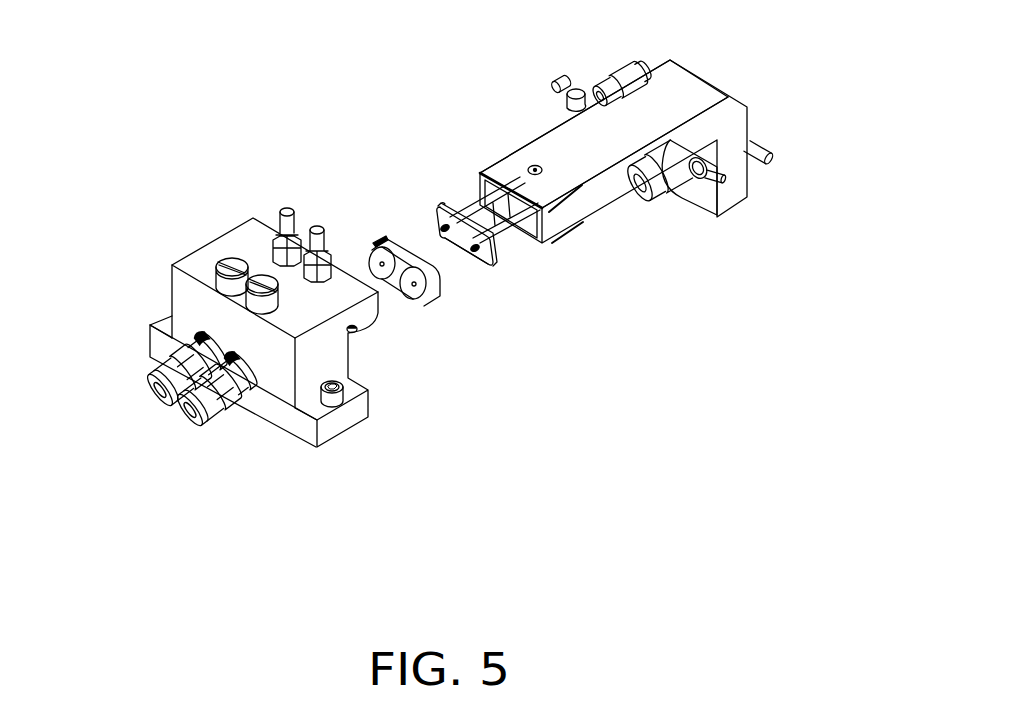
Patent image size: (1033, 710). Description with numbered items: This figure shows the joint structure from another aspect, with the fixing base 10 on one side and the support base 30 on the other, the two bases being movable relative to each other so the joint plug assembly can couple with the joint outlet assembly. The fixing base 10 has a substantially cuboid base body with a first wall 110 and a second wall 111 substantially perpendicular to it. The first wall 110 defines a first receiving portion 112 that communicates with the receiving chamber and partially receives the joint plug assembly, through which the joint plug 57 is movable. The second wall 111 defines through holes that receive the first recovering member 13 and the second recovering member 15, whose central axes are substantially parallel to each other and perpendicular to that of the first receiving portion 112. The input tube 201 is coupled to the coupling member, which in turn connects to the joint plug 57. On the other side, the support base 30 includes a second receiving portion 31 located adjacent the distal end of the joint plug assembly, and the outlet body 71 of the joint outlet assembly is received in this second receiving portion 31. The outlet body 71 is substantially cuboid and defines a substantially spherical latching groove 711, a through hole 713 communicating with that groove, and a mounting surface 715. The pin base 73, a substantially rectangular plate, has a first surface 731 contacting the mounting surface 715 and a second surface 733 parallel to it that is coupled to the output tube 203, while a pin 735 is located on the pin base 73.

The fixing base 10 is at (250, 309).
The second wall 111 is at (193, 265).
The first receiving portion 112 is at (170, 315).
The first wall 110 is at (178, 343).
The input tube 201 is at (147, 367).
The joint plug 57 is at (353, 334).
The second recovering member 15 is at (240, 267).
The first recovering member 13 is at (287, 222).
The outlet body 71 is at (371, 209).
The latching groove 711 is at (368, 250).
The through hole 713 is at (382, 261).
The mounting surface 715 is at (405, 243).
The output tube 203 is at (475, 215).
The pin base 73 is at (535, 265).
The first surface 731 is at (489, 259).
The second surface 733 is at (489, 250).
The pin 735 is at (476, 254).
The support base 30 is at (613, 138).
The second receiving portion 31 is at (513, 163).